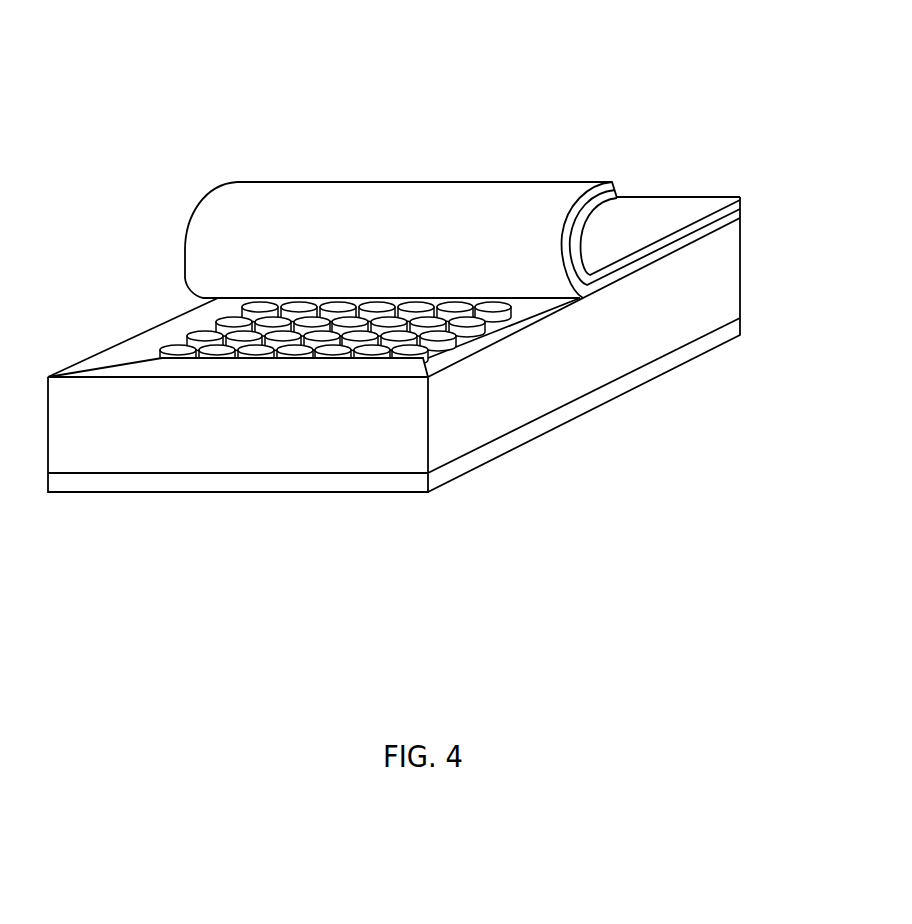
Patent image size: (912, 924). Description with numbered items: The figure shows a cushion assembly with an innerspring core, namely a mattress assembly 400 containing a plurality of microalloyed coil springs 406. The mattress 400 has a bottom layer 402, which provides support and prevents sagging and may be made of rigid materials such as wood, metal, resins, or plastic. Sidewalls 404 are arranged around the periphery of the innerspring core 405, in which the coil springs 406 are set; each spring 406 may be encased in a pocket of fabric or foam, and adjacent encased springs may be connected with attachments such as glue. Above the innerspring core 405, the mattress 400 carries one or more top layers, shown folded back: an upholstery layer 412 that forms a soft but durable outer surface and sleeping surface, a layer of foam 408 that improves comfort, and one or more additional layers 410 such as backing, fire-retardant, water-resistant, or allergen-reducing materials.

The mattress assembly 400 is at (150, 140).
The bottom layer 402 is at (438, 480).
The sidewalls 404 is at (128, 367).
The innerspring core 405 is at (195, 323).
The microalloyed coil spring 406 is at (177, 352).
The foam 408 is at (742, 205).
The additional layers 410 is at (724, 212).
The upholstery 412 is at (710, 212).